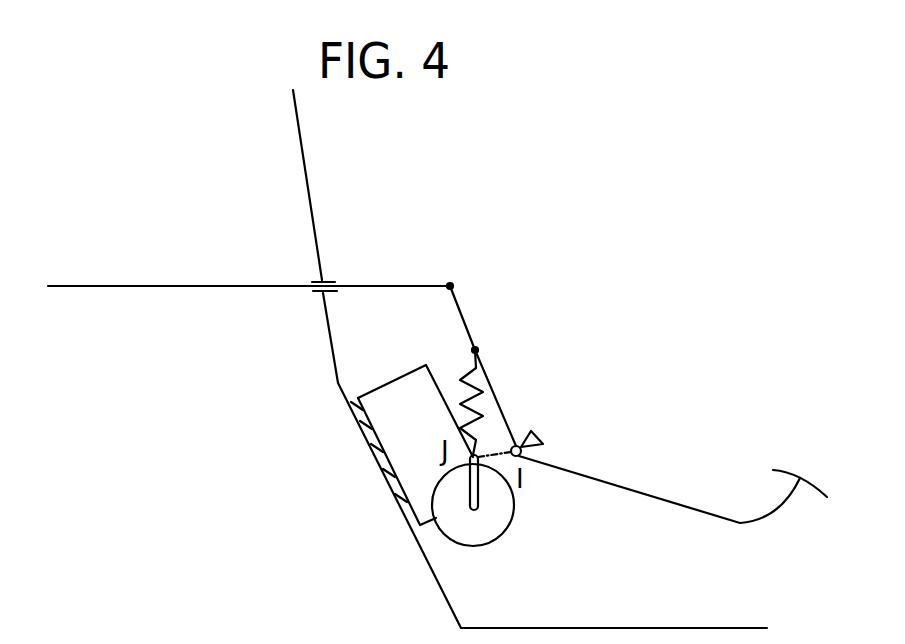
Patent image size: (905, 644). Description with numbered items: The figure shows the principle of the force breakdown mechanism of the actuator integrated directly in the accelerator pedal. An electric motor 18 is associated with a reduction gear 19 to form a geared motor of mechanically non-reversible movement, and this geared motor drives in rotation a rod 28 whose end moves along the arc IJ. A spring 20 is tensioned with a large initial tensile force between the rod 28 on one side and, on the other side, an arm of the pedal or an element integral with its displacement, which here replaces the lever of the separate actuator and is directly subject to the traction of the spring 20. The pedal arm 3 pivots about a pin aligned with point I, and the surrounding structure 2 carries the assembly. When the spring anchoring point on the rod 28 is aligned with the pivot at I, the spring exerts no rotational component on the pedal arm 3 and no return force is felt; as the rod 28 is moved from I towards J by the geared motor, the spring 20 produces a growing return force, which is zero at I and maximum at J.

The frame/wall 2 is at (120, 286).
The electric motor 18 is at (389, 381).
The spring 20 is at (461, 368).
The pivoting arm/lever 3 is at (568, 471).
The reduction gear 19 is at (485, 543).
The rod 28 is at (488, 497).